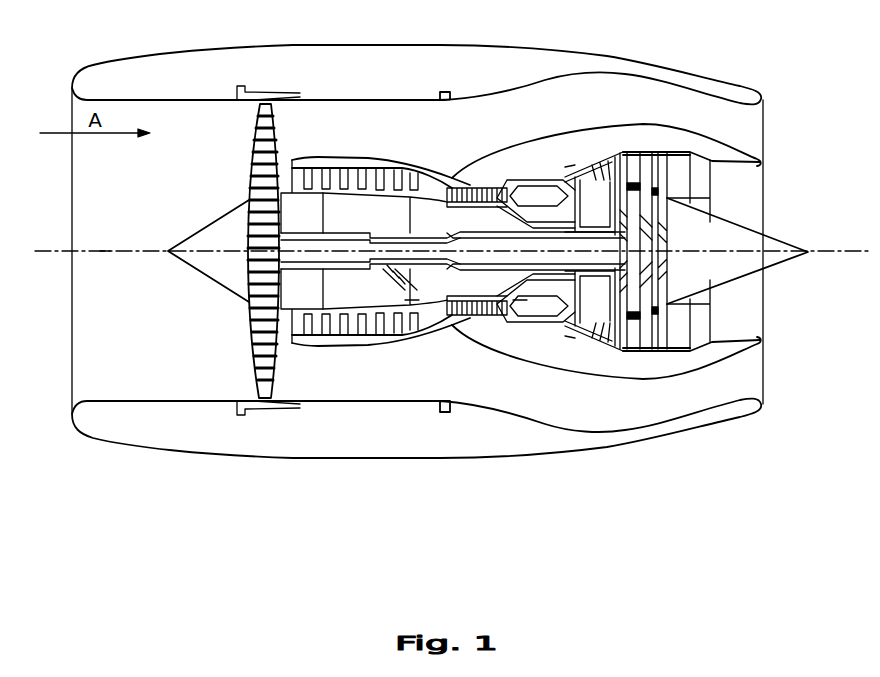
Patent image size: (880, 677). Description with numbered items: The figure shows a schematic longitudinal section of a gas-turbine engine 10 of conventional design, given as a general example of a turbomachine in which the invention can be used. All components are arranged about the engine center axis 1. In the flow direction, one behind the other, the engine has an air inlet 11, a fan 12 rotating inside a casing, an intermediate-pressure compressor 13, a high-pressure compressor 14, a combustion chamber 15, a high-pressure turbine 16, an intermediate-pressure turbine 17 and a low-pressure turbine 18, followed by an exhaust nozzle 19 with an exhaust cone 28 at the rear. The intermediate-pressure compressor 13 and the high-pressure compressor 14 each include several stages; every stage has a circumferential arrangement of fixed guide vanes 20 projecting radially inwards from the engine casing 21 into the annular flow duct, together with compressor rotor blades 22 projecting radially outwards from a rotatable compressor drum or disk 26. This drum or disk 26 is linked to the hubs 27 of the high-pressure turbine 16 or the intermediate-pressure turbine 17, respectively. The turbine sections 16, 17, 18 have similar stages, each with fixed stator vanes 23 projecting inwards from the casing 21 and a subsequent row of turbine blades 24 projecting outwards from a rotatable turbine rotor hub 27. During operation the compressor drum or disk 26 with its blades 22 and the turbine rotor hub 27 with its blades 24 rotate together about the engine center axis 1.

The engine center axis 1 is at (103, 252).
The gas-turbine engine 10 is at (545, 118).
The air inlet 11 is at (207, 120).
The fan 12 is at (256, 123).
The intermediate-pressure compressor 13 is at (357, 205).
The high-pressure compressor 14 is at (480, 188).
The combustion chamber 15 is at (540, 195).
The high-pressure turbine 16 is at (568, 165).
The intermediate-pressure turbine 17 is at (598, 156).
The low-pressure turbine 18 is at (657, 150).
The exhaust nozzle 19 is at (702, 182).
The guide vanes 20 is at (336, 346).
The engine casing 21 is at (362, 346).
The compressor rotor blades 22 is at (387, 346).
The stator vanes 23 is at (615, 338).
The turbine blades 24 is at (637, 338).
The compressor drum or disk 26 is at (520, 300).
The turbine rotor hub 27 is at (655, 270).
The exhaust cone 28 is at (768, 246).